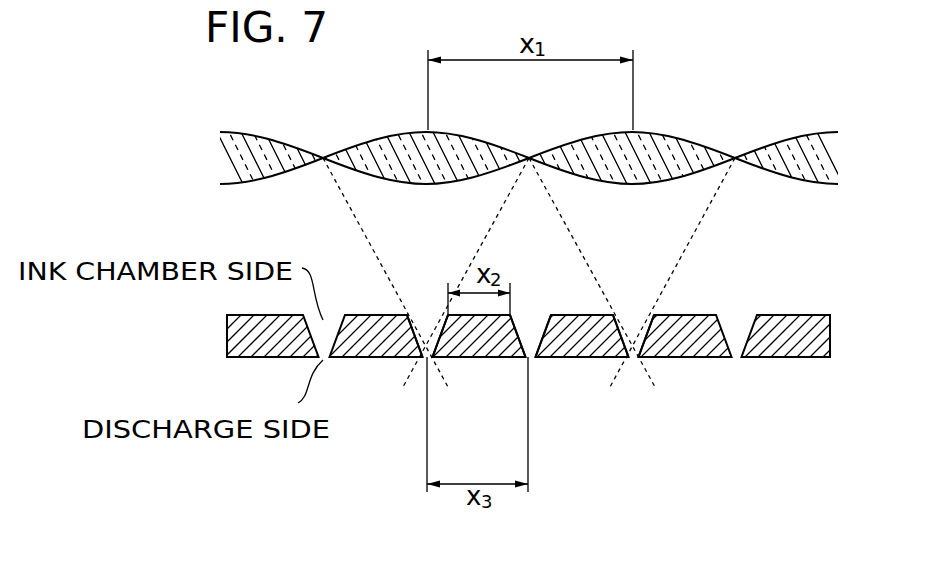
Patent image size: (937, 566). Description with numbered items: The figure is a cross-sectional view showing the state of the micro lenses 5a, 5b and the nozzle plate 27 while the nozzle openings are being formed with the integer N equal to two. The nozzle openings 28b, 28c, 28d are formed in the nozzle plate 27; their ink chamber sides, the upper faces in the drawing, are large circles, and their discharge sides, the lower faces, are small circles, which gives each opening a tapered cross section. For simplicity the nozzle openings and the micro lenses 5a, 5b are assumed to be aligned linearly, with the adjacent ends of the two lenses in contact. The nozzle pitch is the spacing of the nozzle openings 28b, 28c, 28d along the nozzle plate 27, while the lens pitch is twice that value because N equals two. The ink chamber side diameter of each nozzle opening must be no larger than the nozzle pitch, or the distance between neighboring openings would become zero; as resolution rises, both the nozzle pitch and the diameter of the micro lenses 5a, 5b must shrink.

The micro lens 5a is at (471, 150).
The micro lens 5b is at (677, 150).
The nozzle plate 27 is at (793, 350).
The nozzle opening 28b is at (428, 366).
The nozzle opening 28c is at (553, 358).
The nozzle opening 28d is at (628, 358).